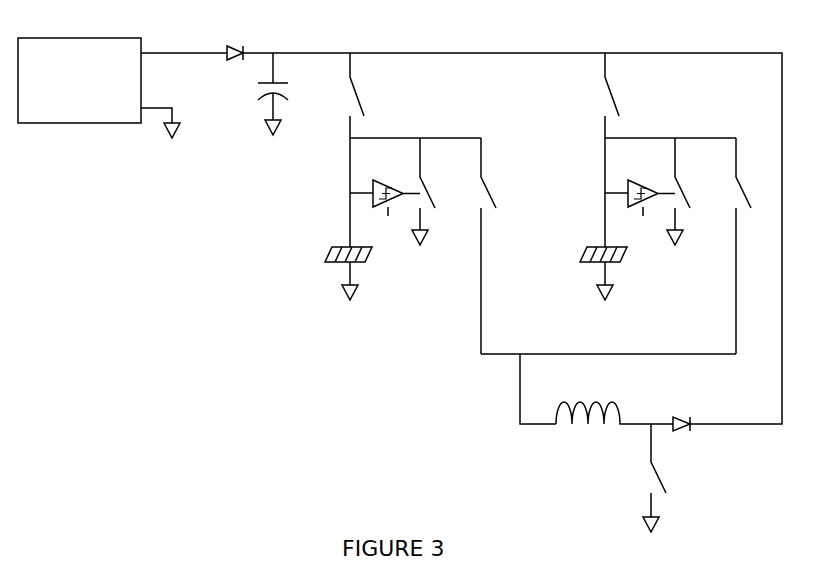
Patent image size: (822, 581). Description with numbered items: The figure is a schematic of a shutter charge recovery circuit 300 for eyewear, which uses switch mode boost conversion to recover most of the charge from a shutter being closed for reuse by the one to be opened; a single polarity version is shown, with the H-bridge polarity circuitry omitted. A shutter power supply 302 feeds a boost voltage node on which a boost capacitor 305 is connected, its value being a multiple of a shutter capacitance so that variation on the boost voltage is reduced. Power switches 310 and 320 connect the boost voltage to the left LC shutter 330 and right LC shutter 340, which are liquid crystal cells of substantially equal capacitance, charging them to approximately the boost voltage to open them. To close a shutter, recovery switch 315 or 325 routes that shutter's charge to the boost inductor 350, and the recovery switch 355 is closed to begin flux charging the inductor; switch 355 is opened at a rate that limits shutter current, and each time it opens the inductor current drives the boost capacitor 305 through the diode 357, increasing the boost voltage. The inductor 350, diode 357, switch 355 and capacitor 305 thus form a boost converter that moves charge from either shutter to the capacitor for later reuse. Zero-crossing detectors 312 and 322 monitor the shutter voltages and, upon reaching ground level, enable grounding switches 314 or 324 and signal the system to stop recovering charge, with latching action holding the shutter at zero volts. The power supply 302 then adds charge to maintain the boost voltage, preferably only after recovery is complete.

The circuit 300 is at (275, 397).
The shutter power supply 302 is at (99, 79).
The boost capacitor C 305 is at (242, 112).
The switch S_LP 310 is at (377, 150).
The zero-crossing detector ZCL 312 is at (385, 189).
The grounding switch S_LG 314 is at (441, 191).
The switch S_LR 315 is at (507, 246).
The switch S_RP 320 is at (629, 150).
The zero-crossing detector ZCR 322 is at (640, 189).
The grounding switch S_RG 324 is at (694, 191).
The switch S_RR 325 is at (759, 246).
The left LC shutter 330 is at (335, 286).
The right LC shutter 340 is at (600, 286).
The boost inductor L 350 is at (609, 426).
The switch S_REC 355 is at (673, 478).
The diode D2 357 is at (700, 413).